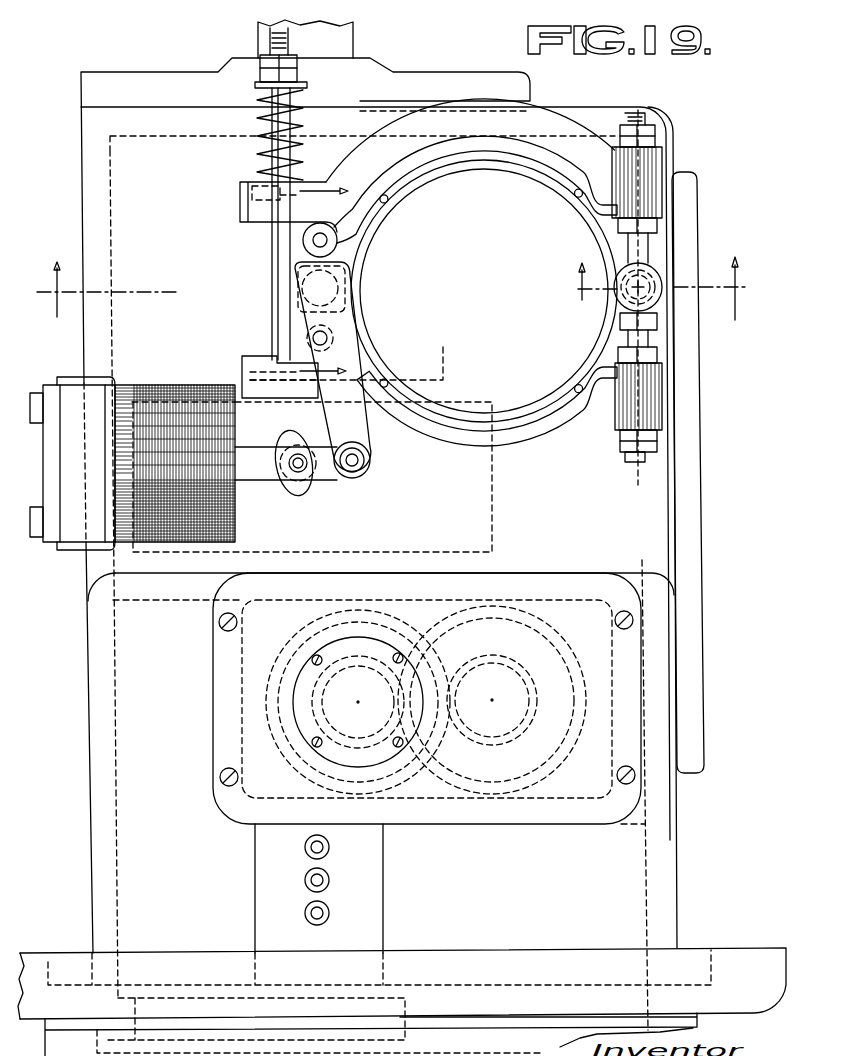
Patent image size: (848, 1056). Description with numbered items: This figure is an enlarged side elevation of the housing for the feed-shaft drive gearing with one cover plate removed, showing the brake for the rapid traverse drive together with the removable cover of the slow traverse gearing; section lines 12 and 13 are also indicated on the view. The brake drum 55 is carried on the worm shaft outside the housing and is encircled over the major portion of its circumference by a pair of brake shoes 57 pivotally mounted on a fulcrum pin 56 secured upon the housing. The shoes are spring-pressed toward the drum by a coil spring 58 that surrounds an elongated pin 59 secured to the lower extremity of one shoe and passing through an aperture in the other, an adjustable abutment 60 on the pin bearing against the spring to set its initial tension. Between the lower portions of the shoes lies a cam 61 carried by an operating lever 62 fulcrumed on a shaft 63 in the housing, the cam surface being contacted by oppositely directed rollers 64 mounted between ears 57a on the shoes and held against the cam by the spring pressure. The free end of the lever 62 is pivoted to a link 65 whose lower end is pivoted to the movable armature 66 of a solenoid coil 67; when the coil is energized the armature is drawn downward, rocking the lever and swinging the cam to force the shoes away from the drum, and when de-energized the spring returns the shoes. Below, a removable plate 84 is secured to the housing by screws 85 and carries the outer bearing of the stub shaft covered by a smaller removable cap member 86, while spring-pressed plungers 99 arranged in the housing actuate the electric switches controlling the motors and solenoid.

The section line 12- 12 is at (324, 286).
The section line 13- 13 is at (404, 289).
The brake drum 55 is at (580, 333).
The fulcrum pin 56 is at (660, 283).
The brake shoes 57 is at (590, 140).
The ears 57a is at (305, 240).
The coil spring 58 is at (268, 157).
The elongated pin 59 is at (273, 268).
The adjustable abutment 60 is at (253, 82).
The cam 61 is at (298, 275).
The operating lever 62 is at (362, 436).
The shaft 63 is at (347, 307).
The rollers 64 is at (340, 234).
The link 65 is at (325, 472).
The movable armature 66 is at (260, 468).
The solenoid coil 67 is at (208, 360).
The removable plate 84 is at (476, 824).
The screws 85 is at (219, 778).
The removable cap member 86 is at (325, 750).
The spring-pressed plungers 99 is at (305, 910).